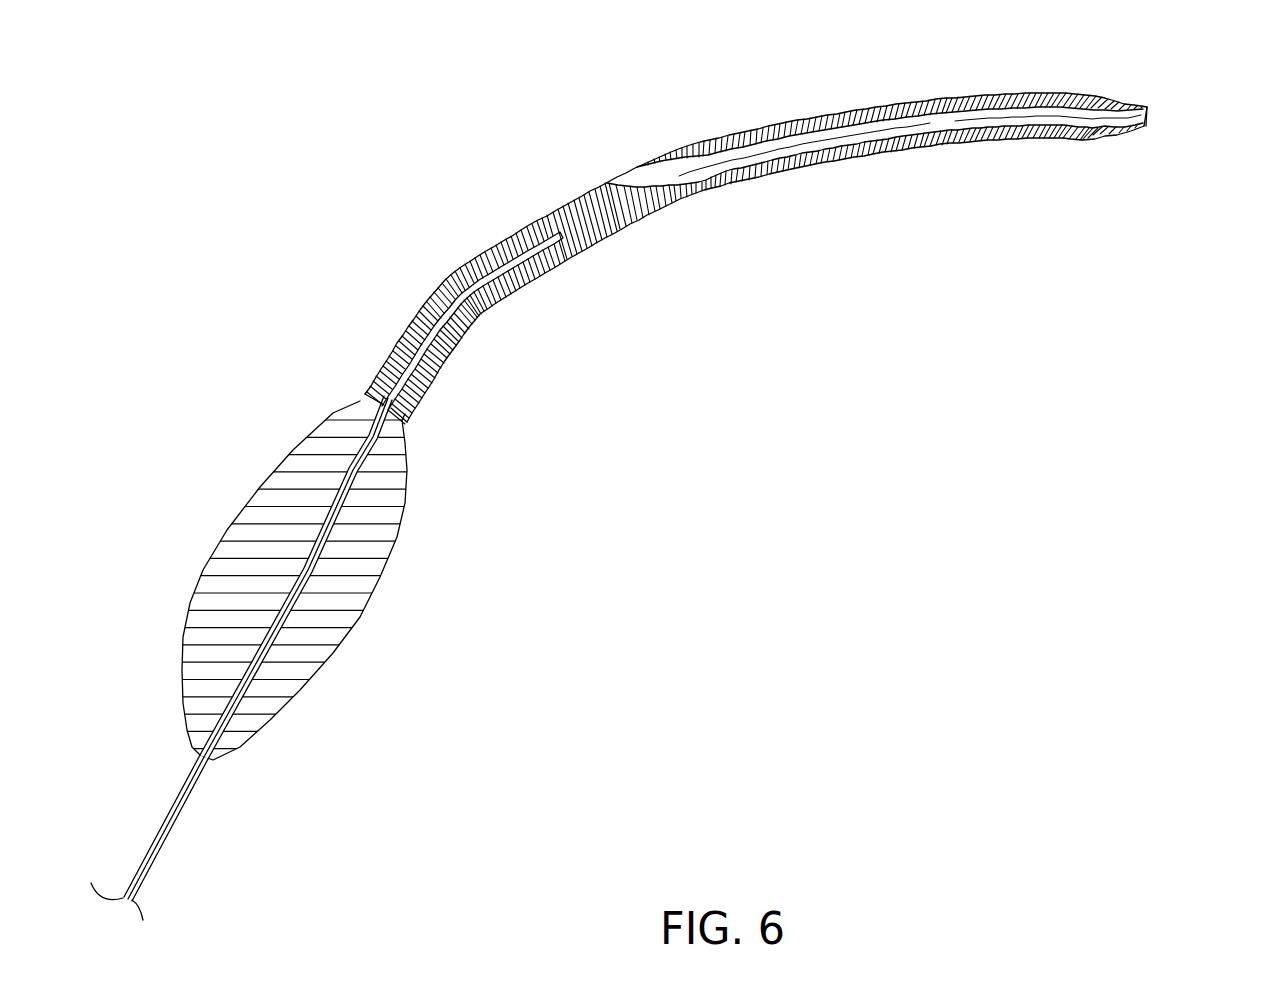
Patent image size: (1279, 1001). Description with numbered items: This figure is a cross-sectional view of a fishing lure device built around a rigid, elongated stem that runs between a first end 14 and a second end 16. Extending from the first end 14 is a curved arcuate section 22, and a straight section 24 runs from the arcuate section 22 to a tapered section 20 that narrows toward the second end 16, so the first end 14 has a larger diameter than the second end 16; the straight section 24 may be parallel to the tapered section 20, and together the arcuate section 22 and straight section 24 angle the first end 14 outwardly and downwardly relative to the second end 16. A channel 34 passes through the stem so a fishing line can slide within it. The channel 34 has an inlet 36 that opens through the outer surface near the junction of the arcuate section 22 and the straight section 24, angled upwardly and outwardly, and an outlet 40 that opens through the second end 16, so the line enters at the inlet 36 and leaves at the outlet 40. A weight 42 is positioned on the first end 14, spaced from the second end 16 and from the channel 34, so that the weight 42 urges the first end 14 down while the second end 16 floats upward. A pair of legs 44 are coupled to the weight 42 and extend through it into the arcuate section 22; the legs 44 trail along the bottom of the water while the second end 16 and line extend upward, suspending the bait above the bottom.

The first end 14 is at (407, 414).
The second end 16 is at (1148, 106).
The tapered section 20 is at (1125, 138).
The arcuate section 22 is at (432, 297).
The straight section 24 is at (847, 160).
The channel 34 is at (945, 120).
The inlet 36 is at (610, 180).
The outlet 40 is at (1152, 117).
The weight 42 is at (365, 603).
The pair of legs 44 is at (150, 843).